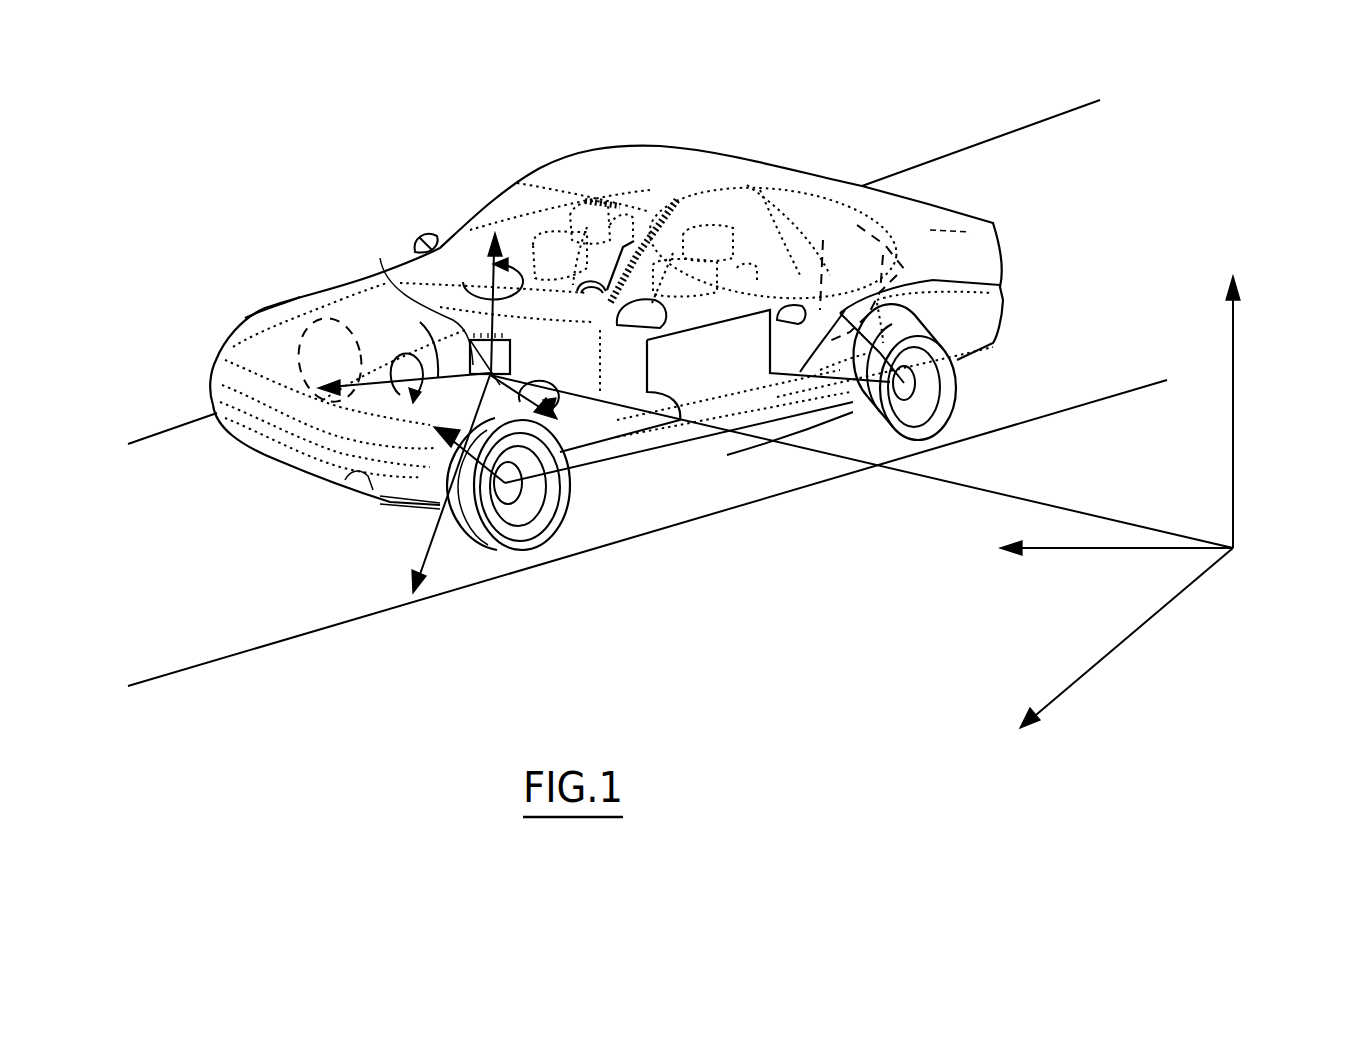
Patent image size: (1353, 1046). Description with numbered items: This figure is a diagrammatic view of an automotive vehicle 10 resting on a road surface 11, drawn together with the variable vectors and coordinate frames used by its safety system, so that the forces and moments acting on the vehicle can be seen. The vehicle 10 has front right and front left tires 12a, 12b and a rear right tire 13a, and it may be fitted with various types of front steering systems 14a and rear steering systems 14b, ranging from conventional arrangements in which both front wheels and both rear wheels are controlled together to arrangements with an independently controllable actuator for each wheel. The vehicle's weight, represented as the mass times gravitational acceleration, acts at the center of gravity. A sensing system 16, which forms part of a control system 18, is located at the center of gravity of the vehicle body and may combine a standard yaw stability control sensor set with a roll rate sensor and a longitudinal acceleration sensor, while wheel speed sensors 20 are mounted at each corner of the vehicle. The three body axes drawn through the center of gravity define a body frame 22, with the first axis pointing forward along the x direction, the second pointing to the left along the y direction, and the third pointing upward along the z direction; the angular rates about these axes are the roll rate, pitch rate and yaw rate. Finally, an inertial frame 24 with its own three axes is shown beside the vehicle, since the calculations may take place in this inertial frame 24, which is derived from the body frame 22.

The automotive vehicle 10 is at (672, 147).
The road surface 11 is at (233, 530).
The front right tire 12a is at (267, 320).
The front left tire 12b is at (535, 527).
The rear right tire 13a is at (897, 276).
The front steering system 14a is at (437, 428).
The rear steering system 14b is at (990, 283).
The sensing system 16 is at (510, 355).
The control system 18 is at (713, 320).
The wheel speed sensors 20 is at (580, 477).
The body frame 22 is at (406, 342).
The inertial frame 24 is at (1243, 553).